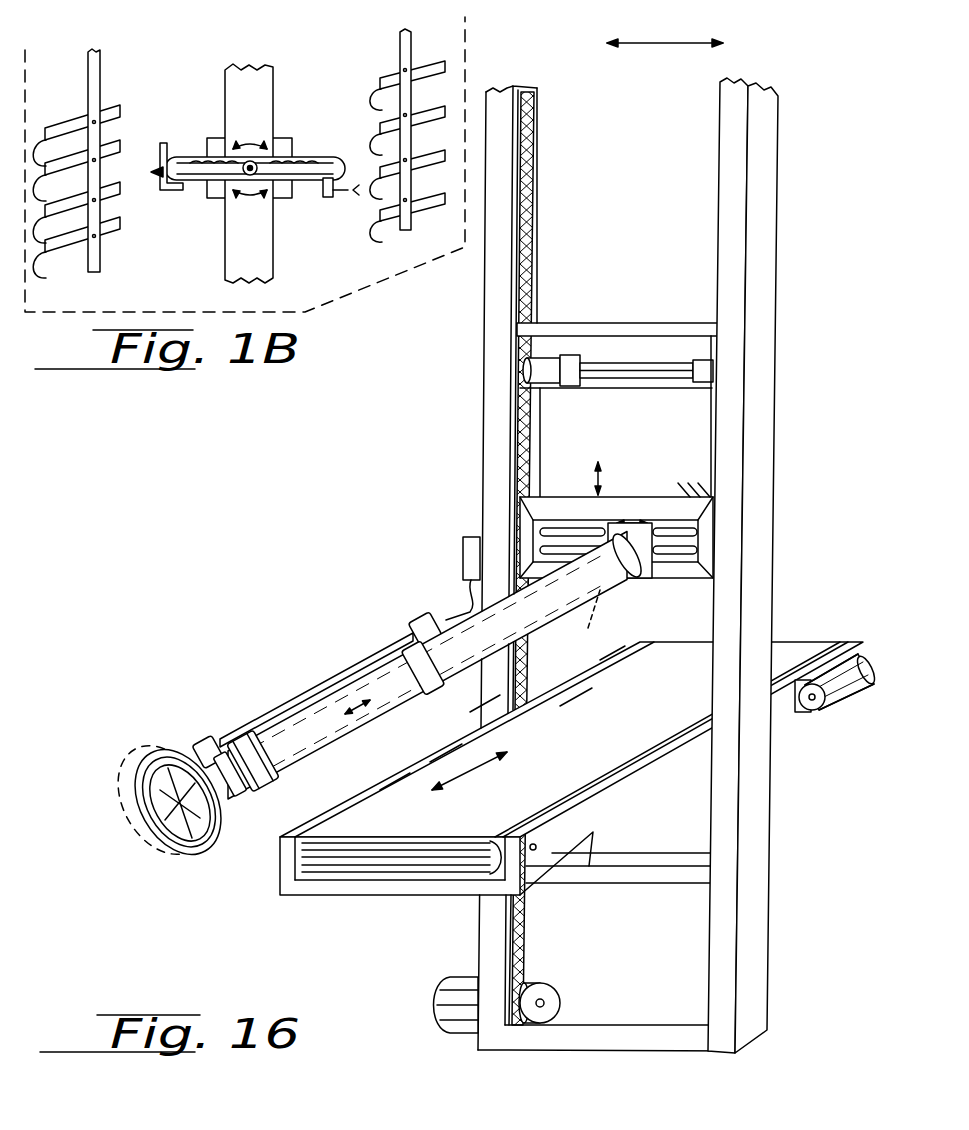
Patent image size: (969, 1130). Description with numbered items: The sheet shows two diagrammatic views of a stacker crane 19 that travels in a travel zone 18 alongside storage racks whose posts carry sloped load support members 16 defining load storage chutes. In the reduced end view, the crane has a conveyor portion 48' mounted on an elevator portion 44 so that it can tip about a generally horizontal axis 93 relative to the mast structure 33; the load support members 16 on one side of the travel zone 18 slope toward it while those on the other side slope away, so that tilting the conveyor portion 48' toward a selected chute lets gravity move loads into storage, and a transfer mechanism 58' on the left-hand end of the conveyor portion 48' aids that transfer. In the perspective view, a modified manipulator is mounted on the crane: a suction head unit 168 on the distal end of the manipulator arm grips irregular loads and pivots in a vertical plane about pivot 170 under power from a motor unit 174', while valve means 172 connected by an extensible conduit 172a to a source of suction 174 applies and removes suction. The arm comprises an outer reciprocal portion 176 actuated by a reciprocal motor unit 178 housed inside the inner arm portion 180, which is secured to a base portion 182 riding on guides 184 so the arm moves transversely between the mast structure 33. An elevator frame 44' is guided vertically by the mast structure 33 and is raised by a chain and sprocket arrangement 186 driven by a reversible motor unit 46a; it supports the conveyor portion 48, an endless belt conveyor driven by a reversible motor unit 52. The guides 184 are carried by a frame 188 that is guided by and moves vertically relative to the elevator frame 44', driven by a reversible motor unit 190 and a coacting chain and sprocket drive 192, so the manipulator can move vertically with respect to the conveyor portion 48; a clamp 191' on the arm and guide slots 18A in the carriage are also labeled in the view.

In FIG. 1B, the load support members 16 is at (48, 128).
In FIG. 1B, the travel zone 18 is at (249, 142).
In FIG. 1B, the stacker crane 19 is at (293, 31).
In FIG. 16, the stacker crane 19 is at (738, 117).
In FIG. 1B, the mast structure 33 is at (272, 73).
In FIG. 16, the mast structure 33 is at (497, 400).
In FIG. 1B, the elevator portion 44 is at (261, 144).
In FIG. 16, the elevator frame 44' is at (617, 603).
In FIG. 16, the reversible motor unit 46a is at (443, 993).
In FIG. 16, the conveyor portion 48 is at (571, 728).
In FIG. 1B, the conveyor portion 48' is at (262, 154).
In FIG. 16, the reversible motor unit 52 is at (852, 679).
In FIG. 1B, the transfer mechanism 58' is at (178, 143).
In FIG. 1B, the horizontal axis 93 is at (237, 181).
In FIG. 16, the suction head unit 168 is at (169, 822).
In FIG. 16, the pivot 170 is at (237, 797).
In FIG. 16, the valve means 172 is at (199, 744).
In FIG. 16, the extensible conduit 172a is at (347, 669).
In FIG. 16, the source of suction 174 is at (444, 564).
In FIG. 16, the motor unit 174' is at (246, 725).
In FIG. 16, the outer reciprocal portion 176 is at (350, 733).
In FIG. 16, the reciprocal motor unit 178 is at (585, 622).
In FIG. 16, the inner arm portion 180 is at (616, 587).
In FIG. 16, the base portion 182 is at (653, 533).
In FIG. 16, the guides 184 is at (697, 489).
In FIG. 16, the chain and sprocket arrangement 186 is at (528, 213).
In FIG. 16, the frame 188 is at (612, 497).
In FIG. 16, the reversible motor unit 190 is at (545, 365).
In FIG. 16, the tube clamp 191' is at (434, 686).
In FIG. 16, the chain and sprocket drive 192 is at (531, 399).
In FIG. 16, the guide slots 18A is at (557, 550).